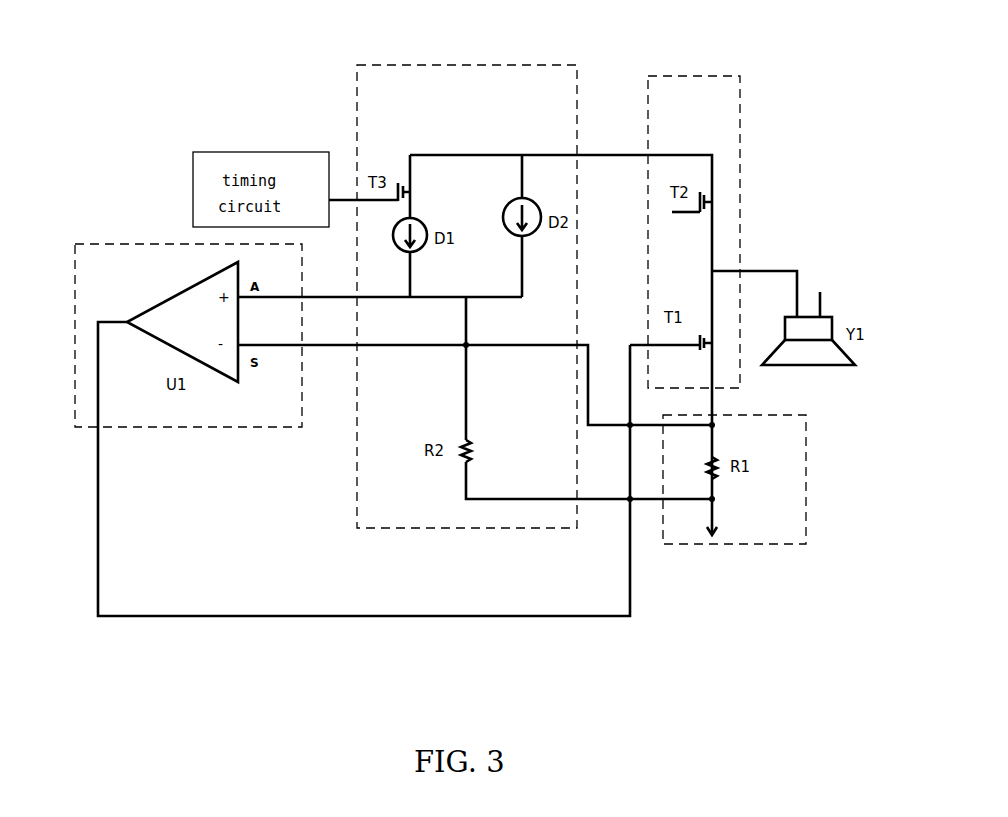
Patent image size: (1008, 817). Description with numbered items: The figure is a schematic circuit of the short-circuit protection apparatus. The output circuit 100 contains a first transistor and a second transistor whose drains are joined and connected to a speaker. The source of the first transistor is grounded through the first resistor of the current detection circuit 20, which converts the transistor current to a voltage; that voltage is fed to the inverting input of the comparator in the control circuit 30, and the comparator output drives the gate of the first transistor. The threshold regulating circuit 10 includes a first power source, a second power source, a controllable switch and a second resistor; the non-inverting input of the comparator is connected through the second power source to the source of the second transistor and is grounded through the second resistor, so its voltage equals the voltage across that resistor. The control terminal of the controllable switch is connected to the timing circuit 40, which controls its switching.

The threshold regulating circuit 10 is at (410, 65).
The current detection circuit 20 is at (680, 544).
The control circuit 30 is at (140, 244).
The timing circuit 40 is at (237, 152).
The output circuit 100 is at (697, 76).